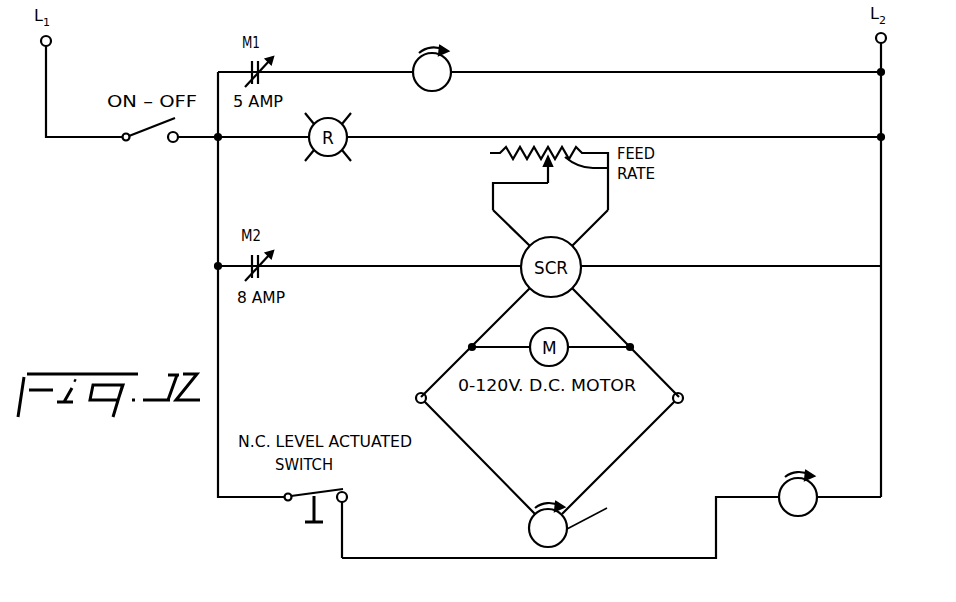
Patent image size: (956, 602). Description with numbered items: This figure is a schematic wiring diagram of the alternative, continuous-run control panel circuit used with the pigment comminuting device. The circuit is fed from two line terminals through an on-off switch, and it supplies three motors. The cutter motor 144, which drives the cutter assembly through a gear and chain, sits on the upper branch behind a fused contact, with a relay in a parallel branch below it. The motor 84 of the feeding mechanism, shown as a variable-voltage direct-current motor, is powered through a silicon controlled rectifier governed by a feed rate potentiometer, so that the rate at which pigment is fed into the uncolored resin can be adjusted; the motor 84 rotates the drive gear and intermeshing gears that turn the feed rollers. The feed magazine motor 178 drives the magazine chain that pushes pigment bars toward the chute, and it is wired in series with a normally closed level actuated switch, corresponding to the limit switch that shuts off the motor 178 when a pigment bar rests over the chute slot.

The motor 144 is at (450, 71).
The motor 84 is at (565, 540).
The motor 178 is at (807, 510).